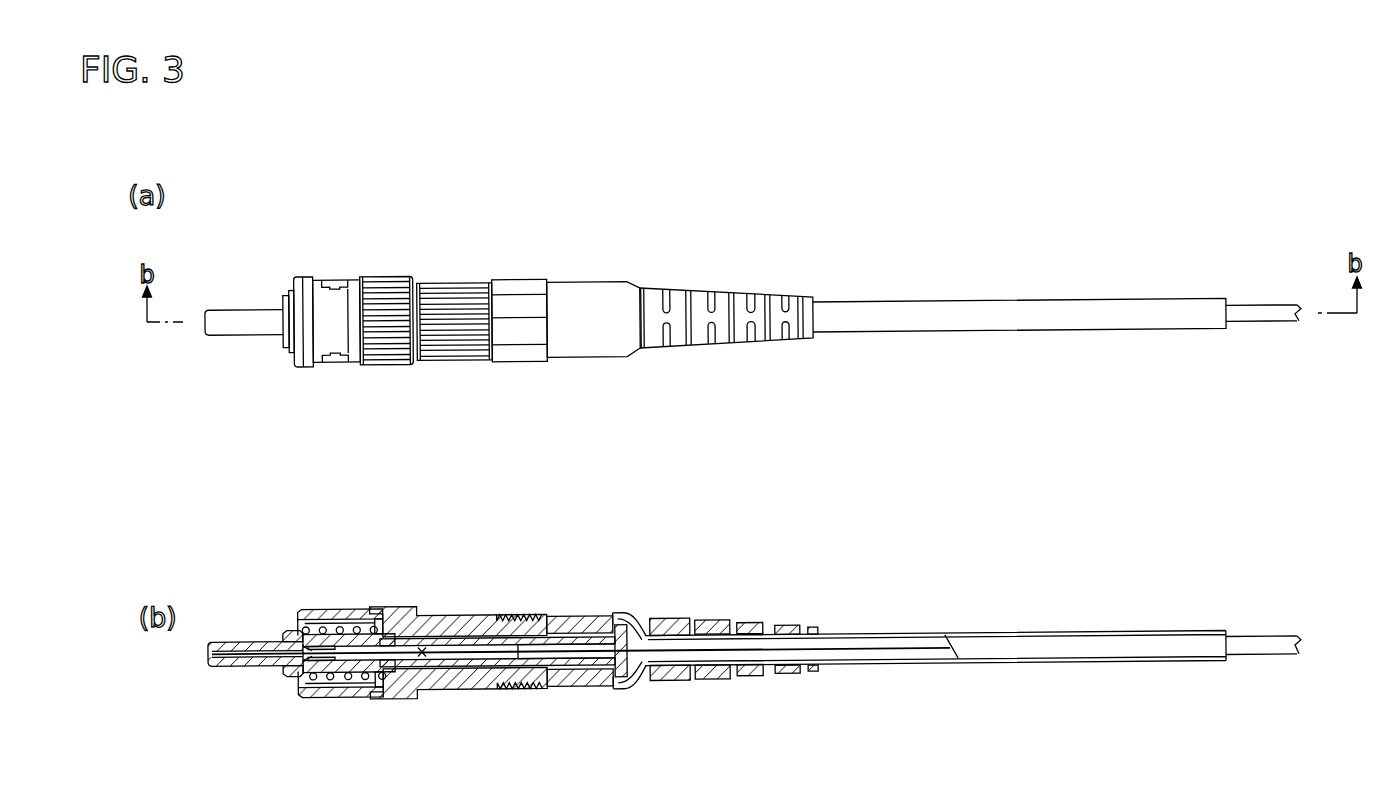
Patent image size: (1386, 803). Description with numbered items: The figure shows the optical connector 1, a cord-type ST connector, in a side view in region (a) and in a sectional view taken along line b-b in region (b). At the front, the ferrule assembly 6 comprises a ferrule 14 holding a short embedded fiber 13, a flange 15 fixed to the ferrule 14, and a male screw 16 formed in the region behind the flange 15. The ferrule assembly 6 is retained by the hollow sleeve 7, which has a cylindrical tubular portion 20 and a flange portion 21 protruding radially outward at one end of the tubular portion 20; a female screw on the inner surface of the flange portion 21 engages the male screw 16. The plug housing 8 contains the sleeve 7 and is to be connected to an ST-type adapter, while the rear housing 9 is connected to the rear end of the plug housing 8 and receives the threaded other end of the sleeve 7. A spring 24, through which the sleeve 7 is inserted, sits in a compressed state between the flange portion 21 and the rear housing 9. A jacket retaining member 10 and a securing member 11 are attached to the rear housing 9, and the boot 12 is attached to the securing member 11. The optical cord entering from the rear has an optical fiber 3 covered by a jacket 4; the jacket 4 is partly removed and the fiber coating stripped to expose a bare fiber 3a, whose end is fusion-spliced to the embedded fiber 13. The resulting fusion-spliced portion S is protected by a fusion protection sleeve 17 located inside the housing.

The optical connector 1 is at (764, 238).
The optical fiber 3 is at (525, 622).
The bare fiber 3a is at (477, 632).
The jacket 4 is at (643, 625).
The ferrule assembly 6 is at (256, 304).
The sleeve 7 is at (355, 668).
The plug housing 8 is at (352, 292).
The rear housing 9 is at (448, 300).
The jacket retaining member 10 is at (568, 630).
The securing member 11 is at (517, 304).
The boot 12 is at (597, 305).
The embedded fiber 13 is at (240, 658).
The ferrule 14 is at (227, 318).
The flange 15 is at (282, 673).
The male screw 16 is at (298, 632).
The fusion protection sleeve 17 is at (477, 675).
The tubular portion 20 is at (342, 673).
The flange portion 21 is at (292, 675).
The spring 24 is at (355, 632).
The fusion-spliced portion S is at (420, 660).